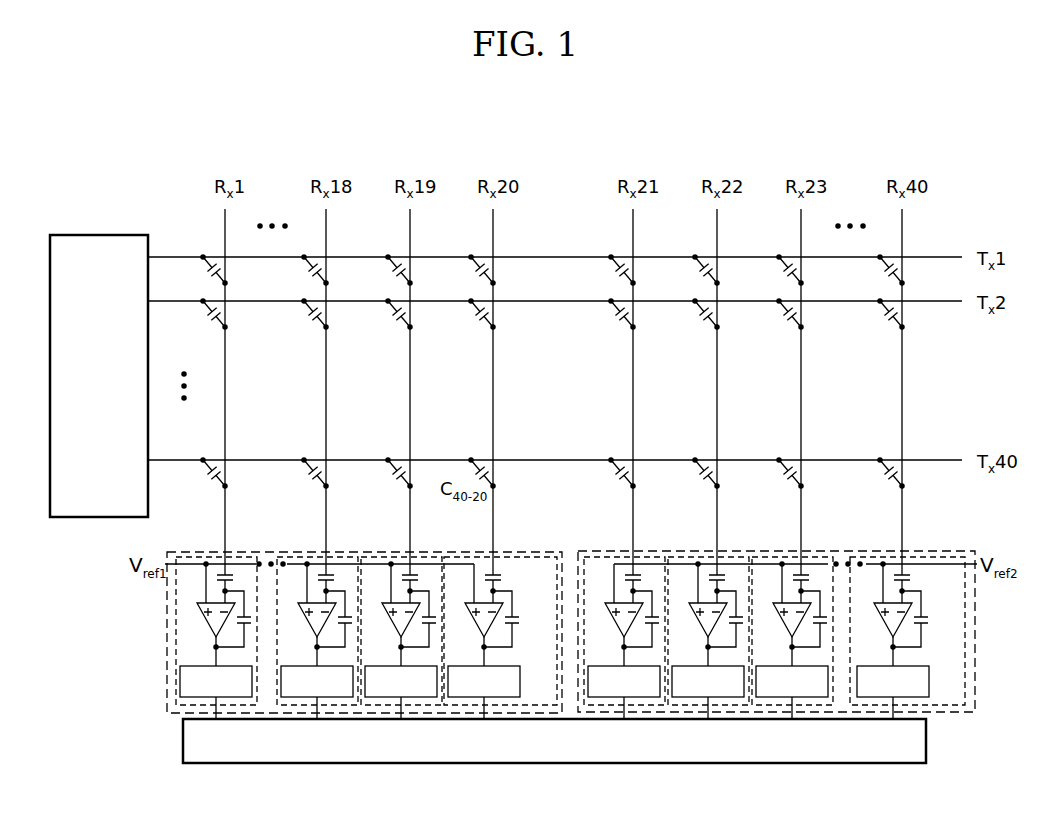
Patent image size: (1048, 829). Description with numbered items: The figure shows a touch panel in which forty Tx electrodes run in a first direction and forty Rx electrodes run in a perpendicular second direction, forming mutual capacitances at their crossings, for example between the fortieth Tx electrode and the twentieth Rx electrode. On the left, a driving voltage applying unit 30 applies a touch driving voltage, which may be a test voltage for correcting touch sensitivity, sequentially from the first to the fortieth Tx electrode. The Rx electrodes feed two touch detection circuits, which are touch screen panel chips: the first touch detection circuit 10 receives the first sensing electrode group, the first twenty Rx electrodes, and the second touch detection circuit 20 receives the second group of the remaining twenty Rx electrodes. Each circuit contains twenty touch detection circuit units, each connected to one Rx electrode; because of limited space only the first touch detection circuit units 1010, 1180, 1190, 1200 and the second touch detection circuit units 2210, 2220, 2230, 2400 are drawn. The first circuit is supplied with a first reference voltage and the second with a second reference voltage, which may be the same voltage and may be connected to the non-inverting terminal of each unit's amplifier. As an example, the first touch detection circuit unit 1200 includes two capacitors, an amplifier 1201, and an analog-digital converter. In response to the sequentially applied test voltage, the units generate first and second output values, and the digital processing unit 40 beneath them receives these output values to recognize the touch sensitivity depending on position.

The driving voltage applying unit 30 is at (125, 235).
The digital processing unit 40 is at (183, 741).
The first touch detection circuit 10 is at (431, 552).
The second touch detection circuit 20 is at (771, 552).
The first touch detection circuit unit 1010 is at (202, 552).
The first touch detection circuit unit 1180 is at (302, 552).
The first touch detection circuit unit 1190 is at (388, 552).
The first touch detection circuit unit 1200 is at (531, 552).
The amplifier 1201 is at (491, 624).
The second touch detection circuit unit 2210 is at (612, 552).
The second touch detection circuit unit 2220 is at (695, 552).
The second touch detection circuit unit 2230 is at (826, 552).
The second touch detection circuit unit 2400 is at (938, 552).